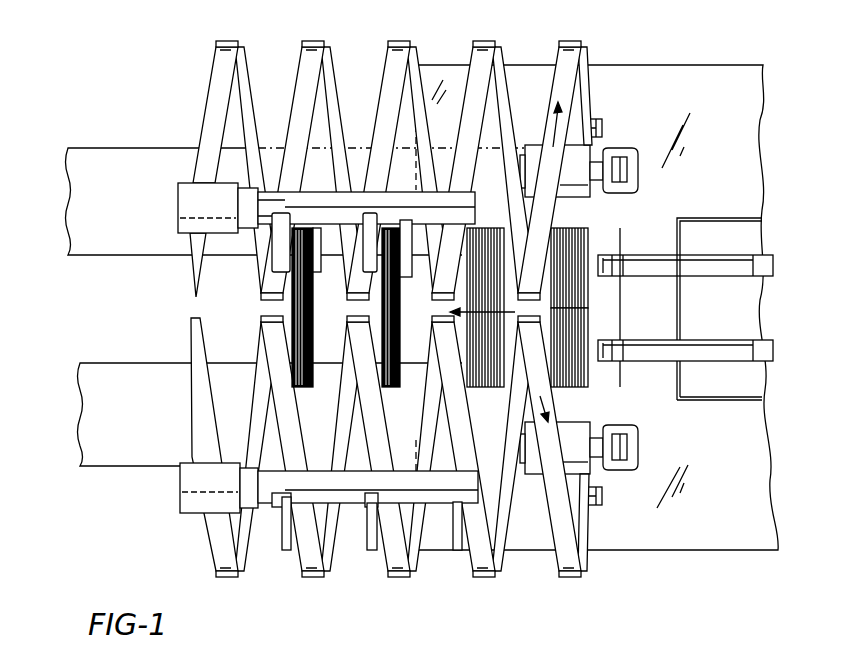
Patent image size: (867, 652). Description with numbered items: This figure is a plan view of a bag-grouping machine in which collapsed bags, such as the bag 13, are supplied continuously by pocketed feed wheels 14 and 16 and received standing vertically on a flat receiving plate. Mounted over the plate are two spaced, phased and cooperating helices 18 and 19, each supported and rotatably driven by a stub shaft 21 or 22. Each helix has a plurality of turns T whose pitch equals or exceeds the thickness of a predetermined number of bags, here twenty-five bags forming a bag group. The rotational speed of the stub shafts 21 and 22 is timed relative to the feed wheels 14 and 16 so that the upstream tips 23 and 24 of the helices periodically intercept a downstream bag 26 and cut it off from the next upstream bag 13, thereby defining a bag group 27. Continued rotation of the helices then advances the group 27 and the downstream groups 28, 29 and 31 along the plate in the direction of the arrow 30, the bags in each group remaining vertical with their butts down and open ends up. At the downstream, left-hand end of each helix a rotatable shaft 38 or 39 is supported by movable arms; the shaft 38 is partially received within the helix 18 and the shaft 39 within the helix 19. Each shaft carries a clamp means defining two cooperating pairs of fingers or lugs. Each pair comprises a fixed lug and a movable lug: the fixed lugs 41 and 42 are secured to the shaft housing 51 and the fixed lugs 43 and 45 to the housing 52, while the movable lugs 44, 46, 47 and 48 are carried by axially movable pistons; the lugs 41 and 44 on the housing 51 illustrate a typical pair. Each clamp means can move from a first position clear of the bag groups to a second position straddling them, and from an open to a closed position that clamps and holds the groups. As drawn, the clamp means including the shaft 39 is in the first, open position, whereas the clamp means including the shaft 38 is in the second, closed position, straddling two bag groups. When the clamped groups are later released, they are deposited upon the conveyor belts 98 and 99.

The collapsed bag 13 is at (620, 302).
The pocketed feed wheel 14 is at (745, 362).
The pocketed feed wheel 16 is at (745, 272).
The helix 18 is at (414, 43).
The helix 19 is at (306, 586).
The stub shaft 21 is at (540, 145).
The stub shaft 22 is at (537, 470).
The upstream end or tip of helix 23 is at (588, 233).
The upstream end or tip of helix 24 is at (588, 417).
The downstream bag 26 is at (592, 253).
The bag group 27 is at (588, 372).
The bag group 28 is at (487, 230).
The bag group 29 is at (412, 228).
The arrow 30 is at (470, 226).
The bag group 31 is at (302, 213).
The rotatable shaft 38 is at (170, 190).
The rotatable shaft 39 is at (170, 489).
The fixed lug 41 is at (272, 258).
The fixed lug 42 is at (366, 273).
The fixed lug 43 is at (281, 541).
The movable lug 44 is at (316, 257).
The fixed lug 45 is at (380, 502).
The movable lug 46 is at (403, 253).
The movable lug 47 is at (367, 543).
The movable lug 48 is at (453, 550).
The shaft housing 51 is at (273, 190).
The housing 52 is at (293, 482).
The conveyor belt 98 is at (120, 241).
The conveyor belt 99 is at (150, 444).
The turns of helix T is at (303, 42).